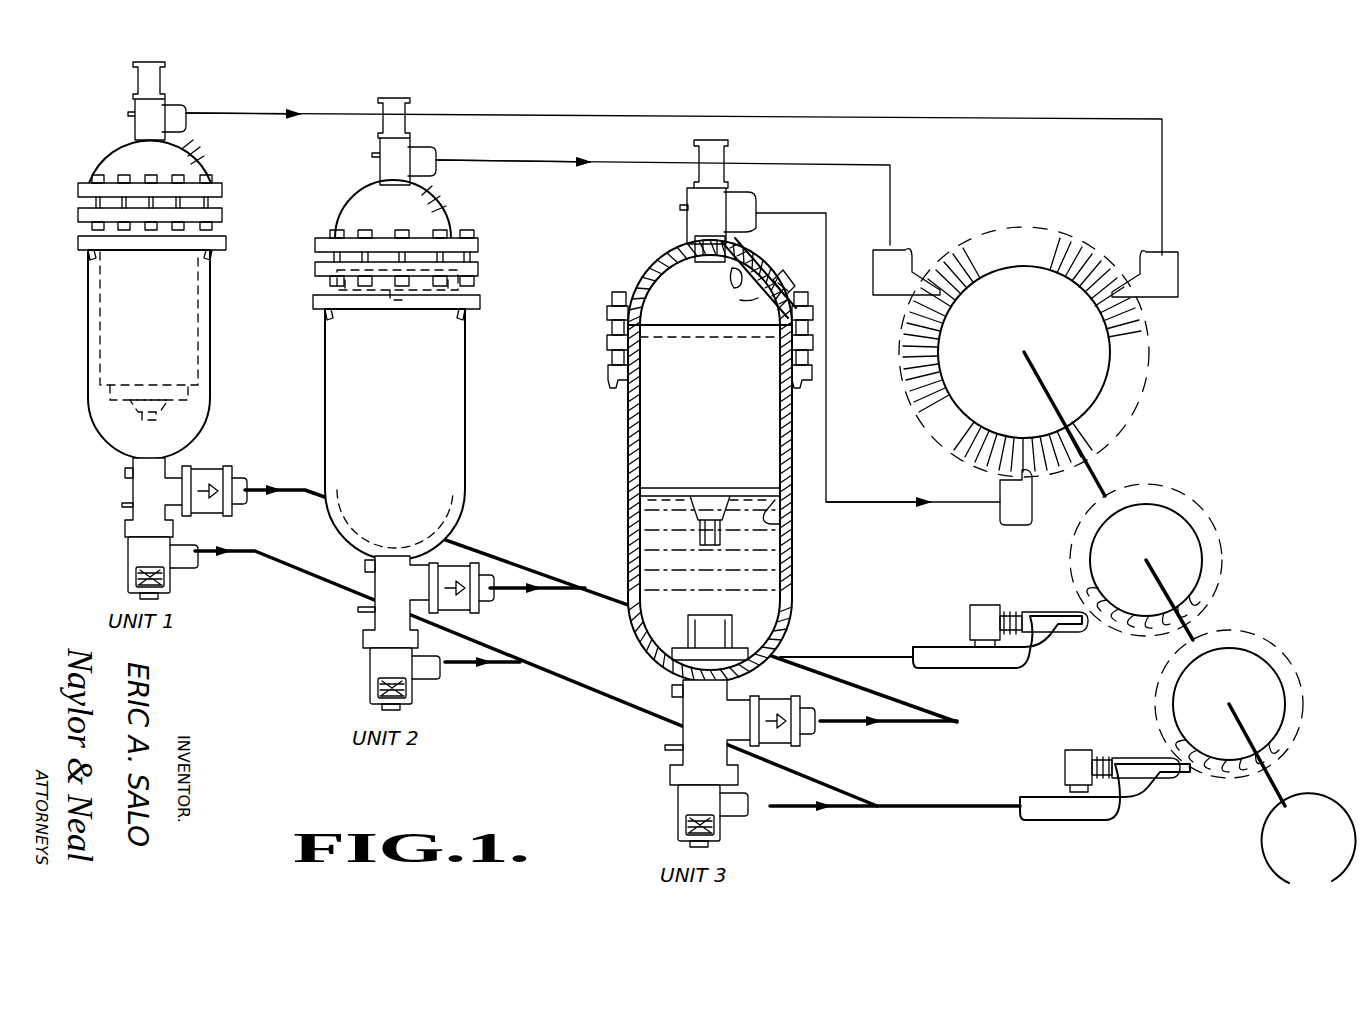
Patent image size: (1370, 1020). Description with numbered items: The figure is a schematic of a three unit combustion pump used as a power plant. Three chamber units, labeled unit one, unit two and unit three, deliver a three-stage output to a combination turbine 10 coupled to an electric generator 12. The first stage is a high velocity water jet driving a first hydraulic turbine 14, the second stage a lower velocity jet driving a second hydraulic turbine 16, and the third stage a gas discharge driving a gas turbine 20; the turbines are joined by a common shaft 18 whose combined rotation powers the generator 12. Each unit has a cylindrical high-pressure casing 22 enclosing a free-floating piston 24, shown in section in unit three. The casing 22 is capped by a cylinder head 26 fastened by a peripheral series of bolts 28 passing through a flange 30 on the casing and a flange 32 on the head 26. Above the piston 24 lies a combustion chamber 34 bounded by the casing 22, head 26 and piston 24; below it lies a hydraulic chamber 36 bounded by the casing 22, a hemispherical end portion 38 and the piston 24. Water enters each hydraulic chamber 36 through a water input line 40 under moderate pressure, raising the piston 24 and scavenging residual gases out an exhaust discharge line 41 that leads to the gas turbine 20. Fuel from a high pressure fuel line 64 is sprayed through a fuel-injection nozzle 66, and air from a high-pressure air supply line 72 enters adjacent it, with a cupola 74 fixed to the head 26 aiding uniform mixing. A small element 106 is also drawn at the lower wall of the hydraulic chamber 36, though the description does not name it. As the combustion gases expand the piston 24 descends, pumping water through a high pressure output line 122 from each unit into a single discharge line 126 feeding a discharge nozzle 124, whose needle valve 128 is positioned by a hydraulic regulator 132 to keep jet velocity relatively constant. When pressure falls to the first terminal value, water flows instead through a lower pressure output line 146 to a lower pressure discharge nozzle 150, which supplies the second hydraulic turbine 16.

The combination turbine 10 is at (1118, 445).
The electric generator 12 is at (1300, 806).
The first hydraulic turbine 14 is at (1204, 594).
The second hydraulic turbine 16 is at (1284, 718).
The shaft 18 is at (1097, 480).
The gas turbine 20 is at (1080, 246).
The cylindrical high-pressure casing 22 is at (212, 352).
The free-floating piston 24 is at (665, 488).
The cylinder head 26 is at (118, 165).
The bolts 28 is at (402, 240).
The flange on the cylindrical casing 30 is at (222, 213).
The flange on the cylinder head 32 is at (218, 196).
The combustion chamber 34 is at (722, 396).
The hydraulic chamber 36 is at (720, 592).
The hemispherical end portion 38 is at (790, 626).
The water input line 40 is at (125, 470).
The exhaust discharge line 41 is at (530, 118).
The high pressure fuel line 64 is at (762, 270).
The fuel-injection nozzle 66 is at (742, 300).
The high-pressure air supply line 72 is at (784, 285).
The cupola 74 is at (732, 278).
The overflow tube 106 is at (772, 522).
The high pressure output line 122 is at (848, 726).
The discharge nozzle 124 is at (1050, 650).
The discharge line 126 is at (845, 658).
The needle valve 128 is at (1010, 616).
The hydraulic regulator 132 is at (977, 604).
The lower pressure output line 146 is at (480, 658).
The lower pressure discharge nozzle 150 is at (1105, 822).